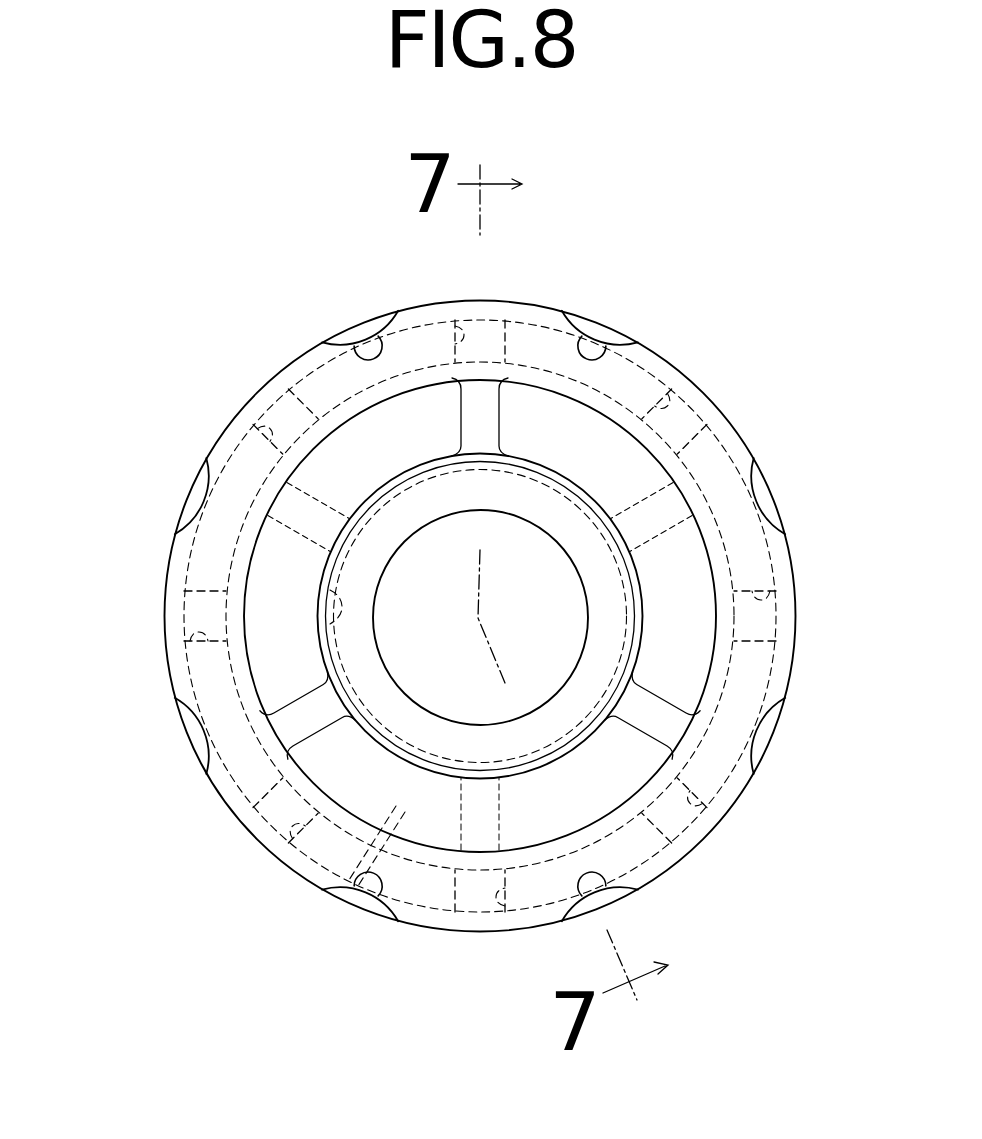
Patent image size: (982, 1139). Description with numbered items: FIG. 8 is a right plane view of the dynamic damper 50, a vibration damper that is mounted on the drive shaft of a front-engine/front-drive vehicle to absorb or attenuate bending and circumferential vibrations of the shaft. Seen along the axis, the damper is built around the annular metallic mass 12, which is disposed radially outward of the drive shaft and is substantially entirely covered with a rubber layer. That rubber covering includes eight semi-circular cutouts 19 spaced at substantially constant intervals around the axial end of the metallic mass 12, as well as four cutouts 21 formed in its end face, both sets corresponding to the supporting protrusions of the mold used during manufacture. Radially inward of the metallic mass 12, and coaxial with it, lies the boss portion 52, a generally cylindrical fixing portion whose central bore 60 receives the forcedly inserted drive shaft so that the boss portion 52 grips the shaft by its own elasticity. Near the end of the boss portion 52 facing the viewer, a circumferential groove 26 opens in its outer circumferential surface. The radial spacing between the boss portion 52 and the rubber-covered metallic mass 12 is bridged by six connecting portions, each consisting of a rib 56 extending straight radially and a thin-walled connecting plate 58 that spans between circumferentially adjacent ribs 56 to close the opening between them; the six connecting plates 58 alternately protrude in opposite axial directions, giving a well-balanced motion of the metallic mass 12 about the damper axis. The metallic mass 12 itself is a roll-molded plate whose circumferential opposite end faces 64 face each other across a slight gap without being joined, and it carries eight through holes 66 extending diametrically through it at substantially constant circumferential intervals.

The metallic mass 12 is at (660, 350).
The cutouts 19 is at (365, 332).
The cutouts 21 is at (382, 340).
The circumferential groove 26 is at (340, 607).
The dynamic damper 50 is at (697, 276).
The boss portion 52 is at (476, 494).
The ribs 56 is at (492, 410).
The connecting plates 58 is at (352, 433).
The bore 60 is at (480, 722).
The circumferential opposite end faces 64 is at (277, 930).
The through holes 66 is at (470, 330).